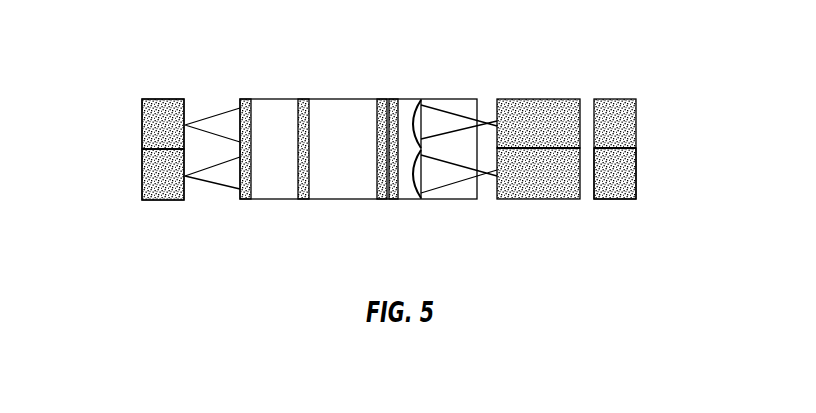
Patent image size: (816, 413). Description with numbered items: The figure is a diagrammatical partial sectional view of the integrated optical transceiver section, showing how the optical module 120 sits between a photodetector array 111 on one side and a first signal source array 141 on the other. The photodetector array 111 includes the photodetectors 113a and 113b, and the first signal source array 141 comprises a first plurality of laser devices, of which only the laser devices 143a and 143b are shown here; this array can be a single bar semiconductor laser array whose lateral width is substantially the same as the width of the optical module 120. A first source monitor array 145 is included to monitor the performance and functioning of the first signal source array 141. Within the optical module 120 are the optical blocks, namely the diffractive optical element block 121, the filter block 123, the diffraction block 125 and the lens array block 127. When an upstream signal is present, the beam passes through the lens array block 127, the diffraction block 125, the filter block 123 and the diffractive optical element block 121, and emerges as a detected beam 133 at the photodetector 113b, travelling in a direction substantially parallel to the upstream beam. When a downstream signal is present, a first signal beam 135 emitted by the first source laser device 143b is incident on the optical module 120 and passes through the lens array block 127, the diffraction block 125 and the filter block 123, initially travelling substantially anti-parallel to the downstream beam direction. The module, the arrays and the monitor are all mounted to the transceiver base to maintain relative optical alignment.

The photodetector array 111 is at (181, 98).
The photodetector 113a is at (142, 125).
The photodetector 113b is at (142, 178).
The optical module 120 is at (335, 82).
The diffractive optical element block 121 is at (283, 200).
The filter block 123 is at (347, 200).
The diffraction block 125 is at (418, 200).
The lens array block 127 is at (443, 200).
The detected beam 133 is at (216, 191).
The first signal beam 135 is at (435, 199).
The first signal source array 141 is at (600, 199).
The laser device 143a is at (542, 108).
The laser device 143b is at (505, 195).
The first source monitor array 145 is at (636, 175).